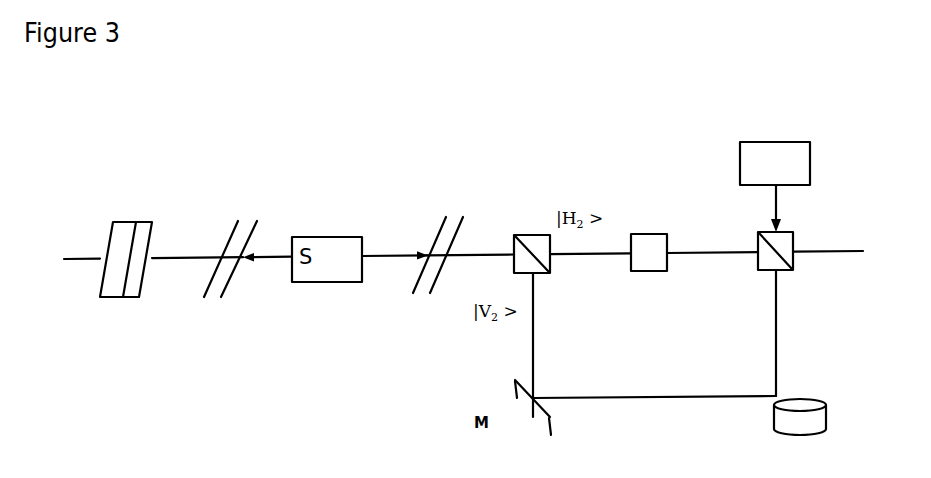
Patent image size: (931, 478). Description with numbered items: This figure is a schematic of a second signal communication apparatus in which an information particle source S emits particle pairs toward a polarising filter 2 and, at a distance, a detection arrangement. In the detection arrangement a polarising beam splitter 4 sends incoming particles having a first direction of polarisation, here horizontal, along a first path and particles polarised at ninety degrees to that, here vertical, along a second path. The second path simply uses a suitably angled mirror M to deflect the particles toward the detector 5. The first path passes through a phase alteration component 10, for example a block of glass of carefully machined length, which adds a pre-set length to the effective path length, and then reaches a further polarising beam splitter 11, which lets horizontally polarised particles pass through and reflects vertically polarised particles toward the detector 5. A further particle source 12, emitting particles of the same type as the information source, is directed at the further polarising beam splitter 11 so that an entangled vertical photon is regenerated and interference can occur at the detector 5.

The polarising filter 2 is at (123, 303).
The polarising beam splitter 4 is at (521, 227).
The detector 5 is at (829, 417).
The phase alteration component 10 is at (649, 252).
The further polarising beam splitter 11 is at (798, 230).
The further particle source 12 is at (775, 187).